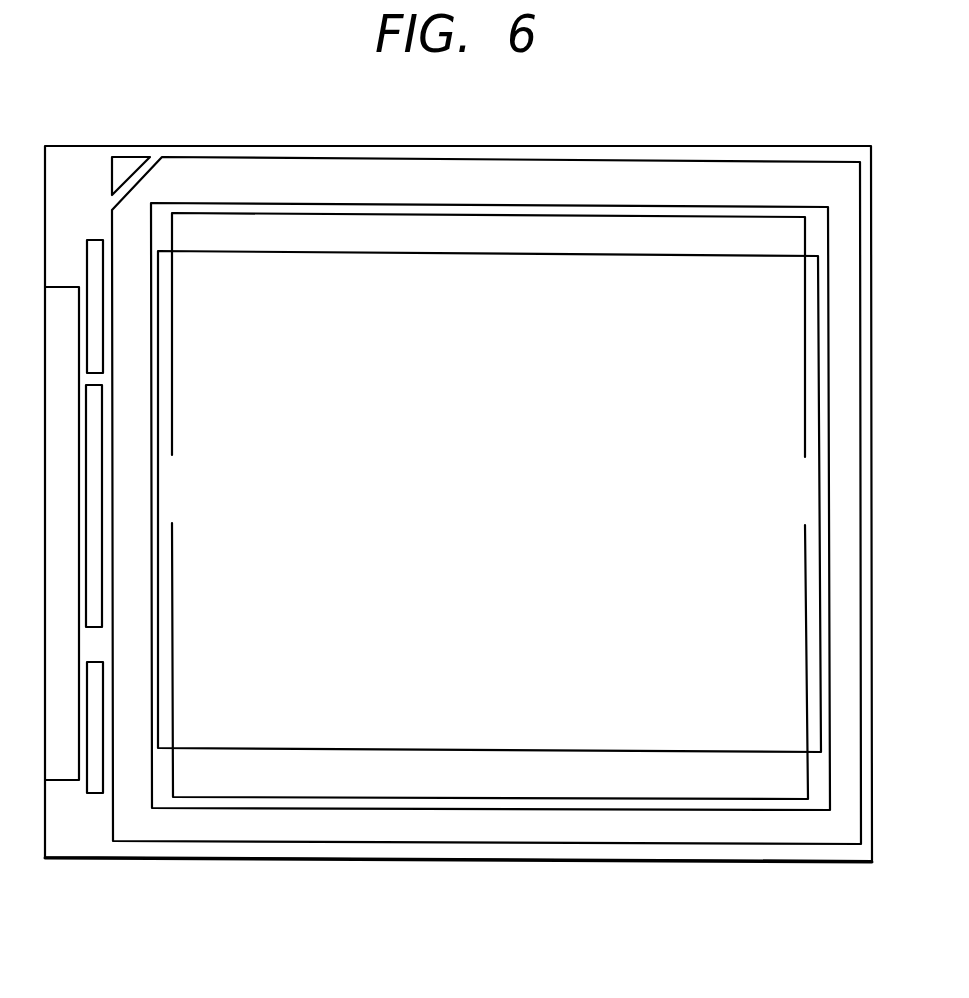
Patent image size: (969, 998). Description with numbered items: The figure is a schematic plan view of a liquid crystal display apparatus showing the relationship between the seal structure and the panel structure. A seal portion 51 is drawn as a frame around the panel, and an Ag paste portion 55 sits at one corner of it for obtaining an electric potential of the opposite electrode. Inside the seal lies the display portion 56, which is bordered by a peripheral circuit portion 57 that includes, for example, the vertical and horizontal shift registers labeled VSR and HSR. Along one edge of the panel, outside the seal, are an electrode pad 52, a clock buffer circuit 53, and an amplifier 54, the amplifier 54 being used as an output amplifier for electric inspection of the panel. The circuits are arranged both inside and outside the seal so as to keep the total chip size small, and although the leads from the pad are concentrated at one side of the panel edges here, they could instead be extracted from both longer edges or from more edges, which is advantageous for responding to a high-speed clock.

The seal portion 51 is at (273, 173).
The electrode pad 52 is at (67, 423).
The clock buffer circuit 53 is at (100, 600).
The amplifier 54 is at (100, 301).
The Ag paste portion 55 is at (125, 163).
The display portion 56 is at (367, 733).
The peripheral circuit portion 57 is at (812, 697).